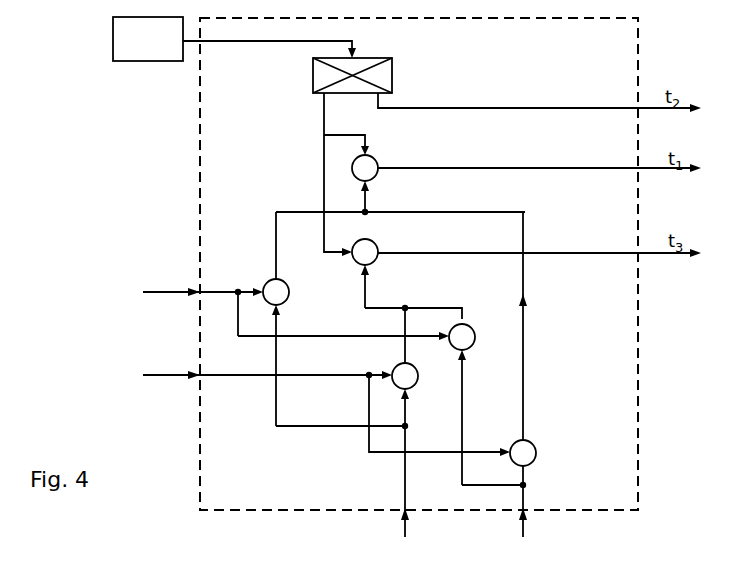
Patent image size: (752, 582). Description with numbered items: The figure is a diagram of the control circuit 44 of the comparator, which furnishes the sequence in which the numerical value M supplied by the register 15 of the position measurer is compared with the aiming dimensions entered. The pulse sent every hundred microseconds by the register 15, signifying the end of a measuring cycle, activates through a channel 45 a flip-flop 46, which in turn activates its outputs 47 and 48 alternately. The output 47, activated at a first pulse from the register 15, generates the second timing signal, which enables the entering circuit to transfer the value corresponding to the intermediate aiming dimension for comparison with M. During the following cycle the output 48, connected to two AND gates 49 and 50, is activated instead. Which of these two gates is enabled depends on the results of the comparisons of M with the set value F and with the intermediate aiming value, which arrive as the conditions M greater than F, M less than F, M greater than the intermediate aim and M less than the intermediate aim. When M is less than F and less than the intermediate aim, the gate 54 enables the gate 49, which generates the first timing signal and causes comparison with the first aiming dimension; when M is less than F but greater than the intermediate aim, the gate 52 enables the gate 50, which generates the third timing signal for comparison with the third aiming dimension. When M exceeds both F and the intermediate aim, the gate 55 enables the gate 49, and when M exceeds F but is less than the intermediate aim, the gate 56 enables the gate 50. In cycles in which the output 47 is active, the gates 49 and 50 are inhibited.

The register of the position measurer 15 is at (161, 58).
The control circuit 44 is at (652, 502).
The channel 45 is at (266, 41).
The flip-flop 46 is at (373, 62).
The output of the flip-flop 47 is at (385, 101).
The output of the flip-flop 48 is at (324, 118).
The AND gate 49 is at (376, 163).
The AND gate 50 is at (373, 246).
The gate 52 is at (415, 383).
The gate 54 is at (532, 447).
The gate 55 is at (284, 290).
The gate 56 is at (468, 330).